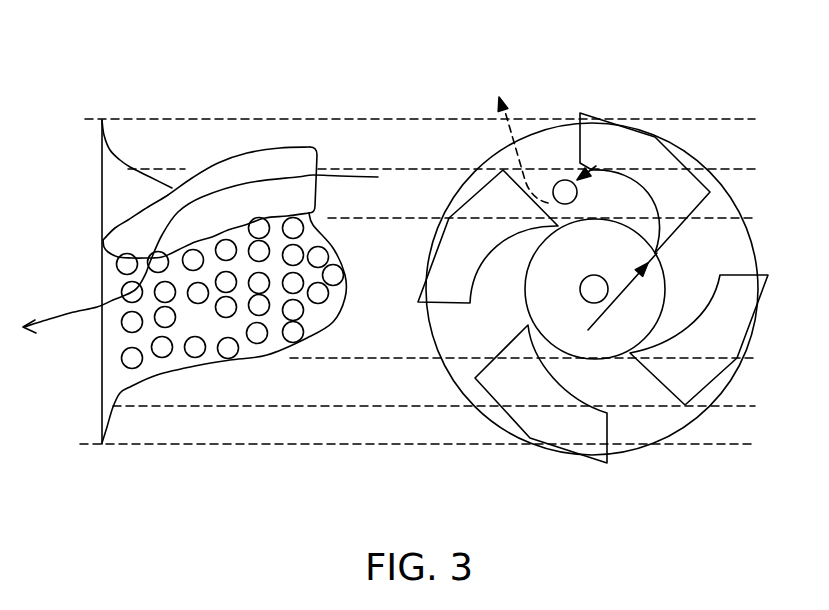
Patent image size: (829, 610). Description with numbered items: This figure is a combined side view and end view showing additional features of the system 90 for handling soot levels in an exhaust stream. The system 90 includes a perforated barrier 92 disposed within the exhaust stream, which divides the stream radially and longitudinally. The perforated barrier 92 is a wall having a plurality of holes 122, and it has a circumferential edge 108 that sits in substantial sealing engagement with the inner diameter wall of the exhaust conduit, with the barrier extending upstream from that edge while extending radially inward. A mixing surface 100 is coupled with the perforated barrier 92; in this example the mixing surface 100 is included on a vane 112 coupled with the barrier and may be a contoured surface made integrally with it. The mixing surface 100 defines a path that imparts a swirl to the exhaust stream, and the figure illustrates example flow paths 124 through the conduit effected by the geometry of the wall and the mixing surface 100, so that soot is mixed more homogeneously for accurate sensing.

The system 90 is at (680, 78).
The perforated barrier 92 is at (128, 163).
The mixing surface 100 is at (303, 146).
The circumferential edge 108 is at (102, 120).
The vane 112 is at (248, 157).
The holes 122 is at (341, 274).
The flow paths 124 is at (650, 183).